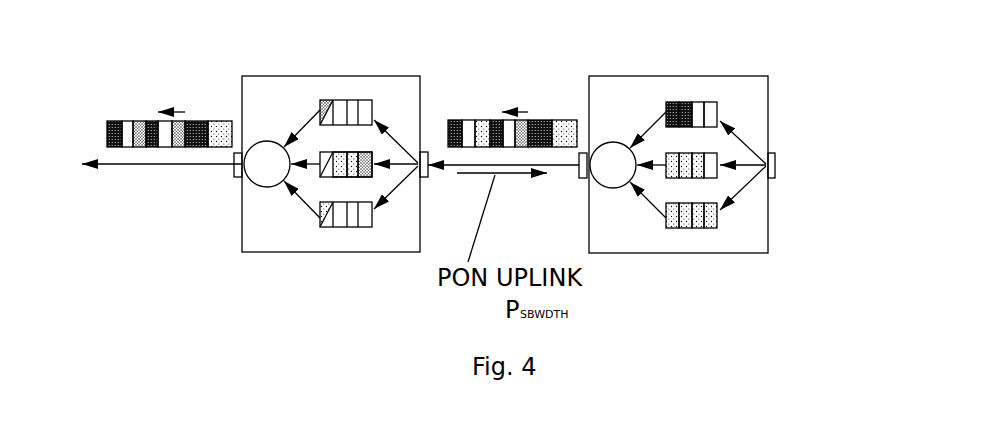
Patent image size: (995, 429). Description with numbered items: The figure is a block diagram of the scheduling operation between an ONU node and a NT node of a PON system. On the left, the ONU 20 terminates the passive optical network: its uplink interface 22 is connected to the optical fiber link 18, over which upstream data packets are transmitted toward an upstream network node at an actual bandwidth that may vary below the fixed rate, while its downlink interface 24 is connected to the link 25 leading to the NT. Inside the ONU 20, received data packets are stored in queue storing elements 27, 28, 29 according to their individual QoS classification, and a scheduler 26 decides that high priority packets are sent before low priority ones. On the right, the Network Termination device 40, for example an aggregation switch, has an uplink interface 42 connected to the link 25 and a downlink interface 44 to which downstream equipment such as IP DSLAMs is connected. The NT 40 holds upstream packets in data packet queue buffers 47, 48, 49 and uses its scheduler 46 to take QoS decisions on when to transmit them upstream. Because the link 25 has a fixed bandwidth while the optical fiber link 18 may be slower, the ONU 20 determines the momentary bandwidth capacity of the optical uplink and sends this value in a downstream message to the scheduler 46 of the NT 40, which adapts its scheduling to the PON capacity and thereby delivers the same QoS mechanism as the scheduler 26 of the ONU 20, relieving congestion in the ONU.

The optical fiber link 18 is at (112, 162).
The ONU 20 is at (263, 76).
The uplink interface 22 is at (237, 178).
The downlink interface 24 is at (428, 152).
The link 25 is at (571, 167).
The scheduler 26 is at (268, 187).
The queue storing element 27 is at (343, 105).
The queue storing element 28 is at (372, 175).
The queue storing element 29 is at (347, 227).
The Network Termination device 40 is at (692, 76).
The uplink interface 42 is at (587, 153).
The downlink interface 44 is at (775, 163).
The scheduler 46 is at (613, 188).
The data packet queue buffer 47 is at (682, 102).
The data packet queue buffer 48 is at (718, 178).
The data packet queue buffer 49 is at (680, 228).